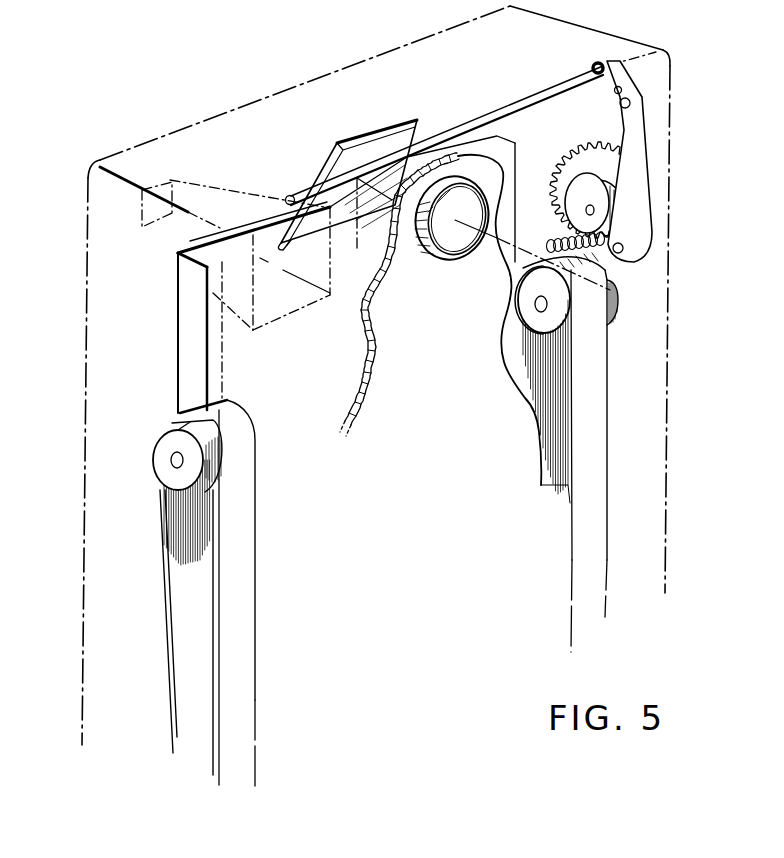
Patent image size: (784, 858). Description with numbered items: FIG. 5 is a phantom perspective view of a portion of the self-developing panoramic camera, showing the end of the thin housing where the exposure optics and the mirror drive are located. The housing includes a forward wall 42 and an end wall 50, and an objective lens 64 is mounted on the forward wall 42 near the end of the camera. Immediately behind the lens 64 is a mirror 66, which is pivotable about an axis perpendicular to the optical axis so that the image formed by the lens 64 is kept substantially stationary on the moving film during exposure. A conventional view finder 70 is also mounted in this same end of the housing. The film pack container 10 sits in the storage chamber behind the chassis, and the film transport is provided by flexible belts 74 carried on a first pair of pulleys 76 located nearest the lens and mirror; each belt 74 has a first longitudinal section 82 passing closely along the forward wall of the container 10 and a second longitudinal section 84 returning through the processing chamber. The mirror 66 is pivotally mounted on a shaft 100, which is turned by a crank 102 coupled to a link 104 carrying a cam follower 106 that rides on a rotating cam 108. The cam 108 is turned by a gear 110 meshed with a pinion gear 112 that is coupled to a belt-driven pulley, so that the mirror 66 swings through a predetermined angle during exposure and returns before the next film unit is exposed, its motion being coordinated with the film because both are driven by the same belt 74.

The container 10 is at (190, 302).
The forward wall 42 is at (447, 372).
The end wall 50 is at (243, 145).
The objective lens 64 is at (462, 248).
The mirror 66 is at (388, 147).
The view finder 70 is at (291, 298).
The flexible belts 74 is at (238, 498).
The first pair of pulleys 76 is at (167, 443).
The first longitudinal section 82 is at (233, 683).
The second longitudinal section 84 is at (183, 542).
The shaft 100 is at (467, 127).
The crank 102 is at (630, 86).
The link 104 is at (632, 122).
The cam follower 106 is at (620, 207).
The cam 108 is at (577, 187).
The gear 110 is at (600, 163).
The pinion gear 112 is at (618, 262).